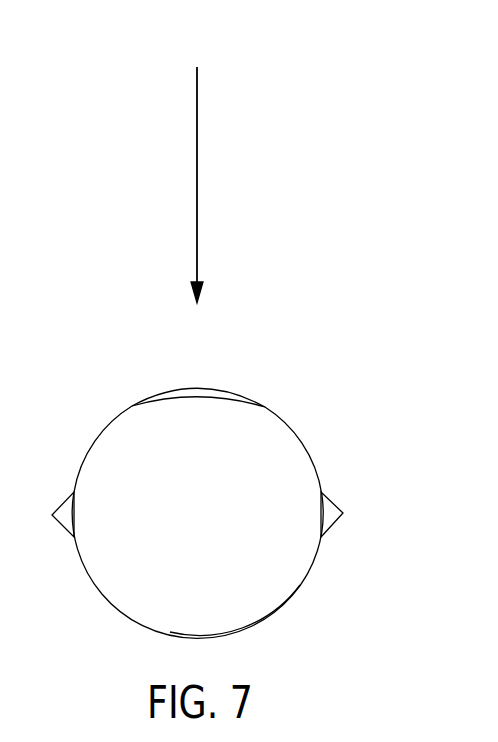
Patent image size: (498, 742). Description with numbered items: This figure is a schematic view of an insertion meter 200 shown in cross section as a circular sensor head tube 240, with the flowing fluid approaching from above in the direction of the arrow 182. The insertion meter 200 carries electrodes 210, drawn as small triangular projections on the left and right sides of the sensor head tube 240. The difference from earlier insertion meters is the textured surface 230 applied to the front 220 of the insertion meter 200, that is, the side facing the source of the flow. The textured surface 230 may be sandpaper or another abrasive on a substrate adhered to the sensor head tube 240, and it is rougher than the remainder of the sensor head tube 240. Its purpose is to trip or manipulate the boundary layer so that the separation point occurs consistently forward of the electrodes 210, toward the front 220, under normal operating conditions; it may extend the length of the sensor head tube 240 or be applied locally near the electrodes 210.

The arrows 182 is at (197, 173).
The insertion meter 200 is at (298, 437).
The electrodes 210 is at (65, 502).
The front 220 is at (133, 369).
The textured surface 230 is at (229, 387).
The sensor head tube 240 is at (310, 572).